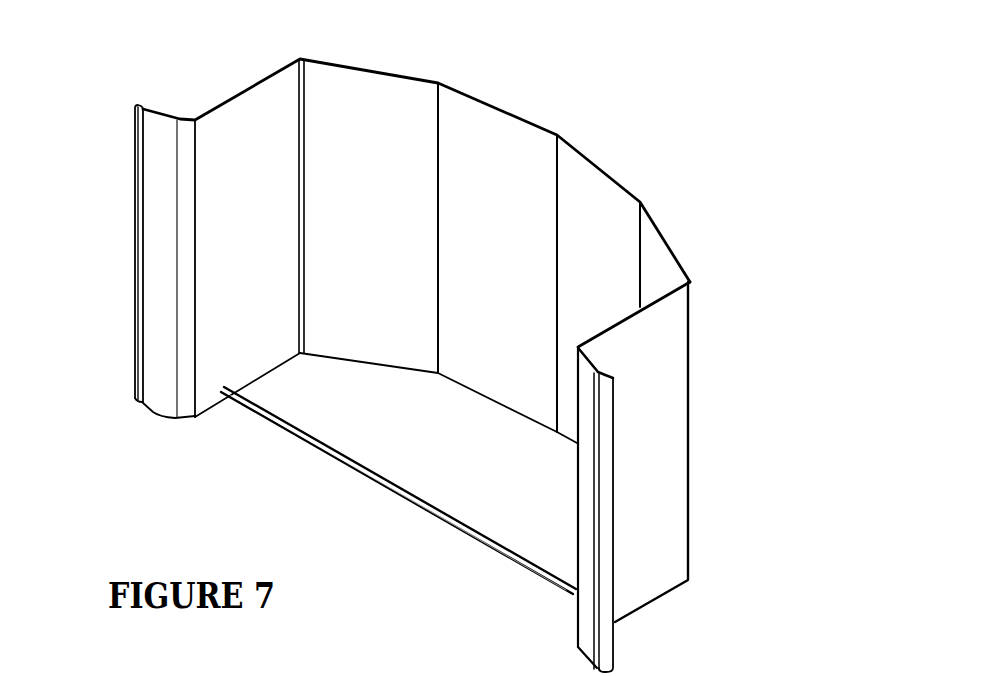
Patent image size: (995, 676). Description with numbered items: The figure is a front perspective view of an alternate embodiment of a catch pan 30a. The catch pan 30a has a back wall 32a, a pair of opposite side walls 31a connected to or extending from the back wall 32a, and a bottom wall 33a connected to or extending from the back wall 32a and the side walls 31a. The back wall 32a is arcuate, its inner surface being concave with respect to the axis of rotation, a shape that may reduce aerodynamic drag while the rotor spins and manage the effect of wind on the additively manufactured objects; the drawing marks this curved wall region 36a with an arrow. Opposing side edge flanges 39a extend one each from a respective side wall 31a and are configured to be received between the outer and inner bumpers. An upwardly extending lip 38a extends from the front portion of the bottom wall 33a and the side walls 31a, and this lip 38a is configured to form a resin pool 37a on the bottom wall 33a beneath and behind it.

The catch pan 30a is at (413, 338).
The side walls 31a is at (643, 480).
The back wall 32a is at (368, 128).
The bottom wall 33a is at (477, 463).
The curved wall 36a is at (467, 113).
The resin pool 37a is at (422, 418).
The lip 38a is at (430, 512).
The side edge flanges 39a is at (162, 252).